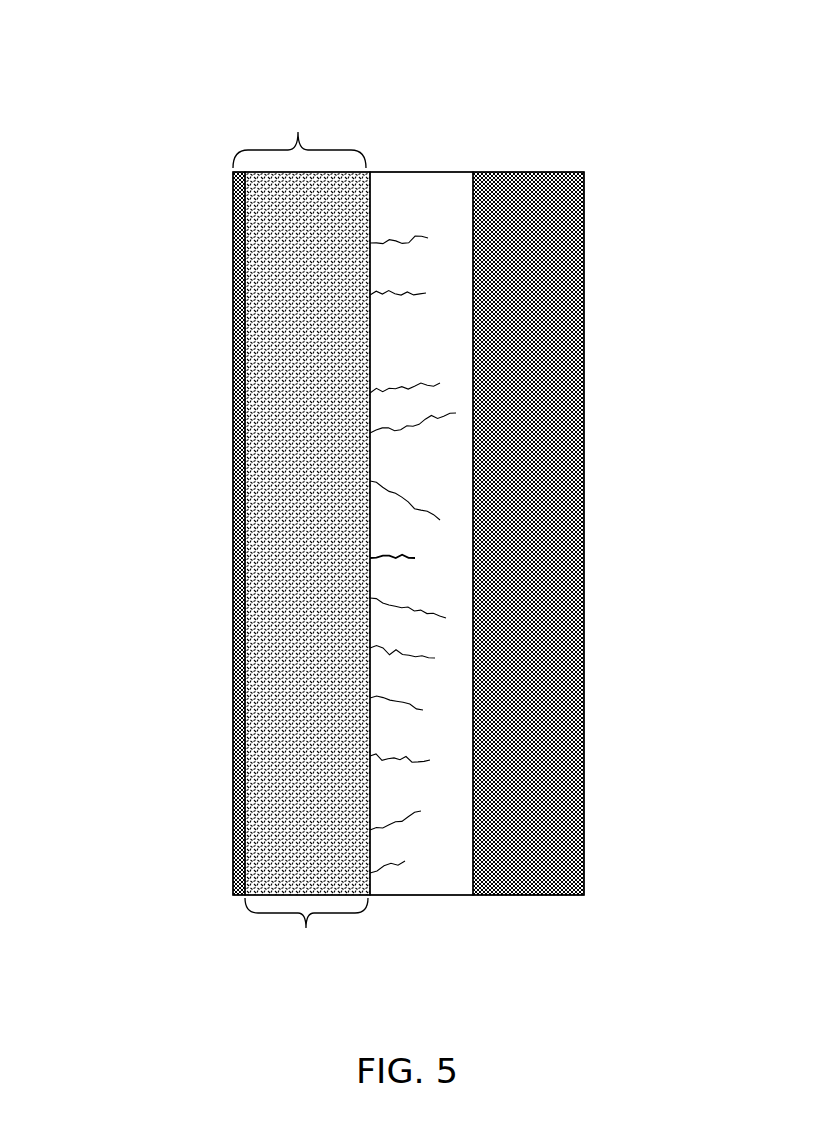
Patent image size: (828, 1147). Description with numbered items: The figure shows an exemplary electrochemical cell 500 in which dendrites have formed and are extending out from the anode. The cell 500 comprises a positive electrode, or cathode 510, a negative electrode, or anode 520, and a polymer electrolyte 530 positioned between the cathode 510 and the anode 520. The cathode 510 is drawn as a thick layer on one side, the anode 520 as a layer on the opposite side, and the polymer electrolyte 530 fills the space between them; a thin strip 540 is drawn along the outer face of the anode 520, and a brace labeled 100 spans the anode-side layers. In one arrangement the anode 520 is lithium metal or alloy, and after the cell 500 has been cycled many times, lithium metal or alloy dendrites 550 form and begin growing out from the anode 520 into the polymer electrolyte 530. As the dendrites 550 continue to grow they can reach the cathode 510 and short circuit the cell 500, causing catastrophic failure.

The electrochemical cell 500 is at (160, 120).
The coated layer stack 100 is at (299, 131).
The positive electrode (cathode) 510 is at (523, 377).
The negative electrode (anode) 520 is at (260, 437).
The polymer electrolyte 530 is at (415, 192).
The thin outer layer 540 is at (230, 708).
The dendrites 550 is at (397, 819).